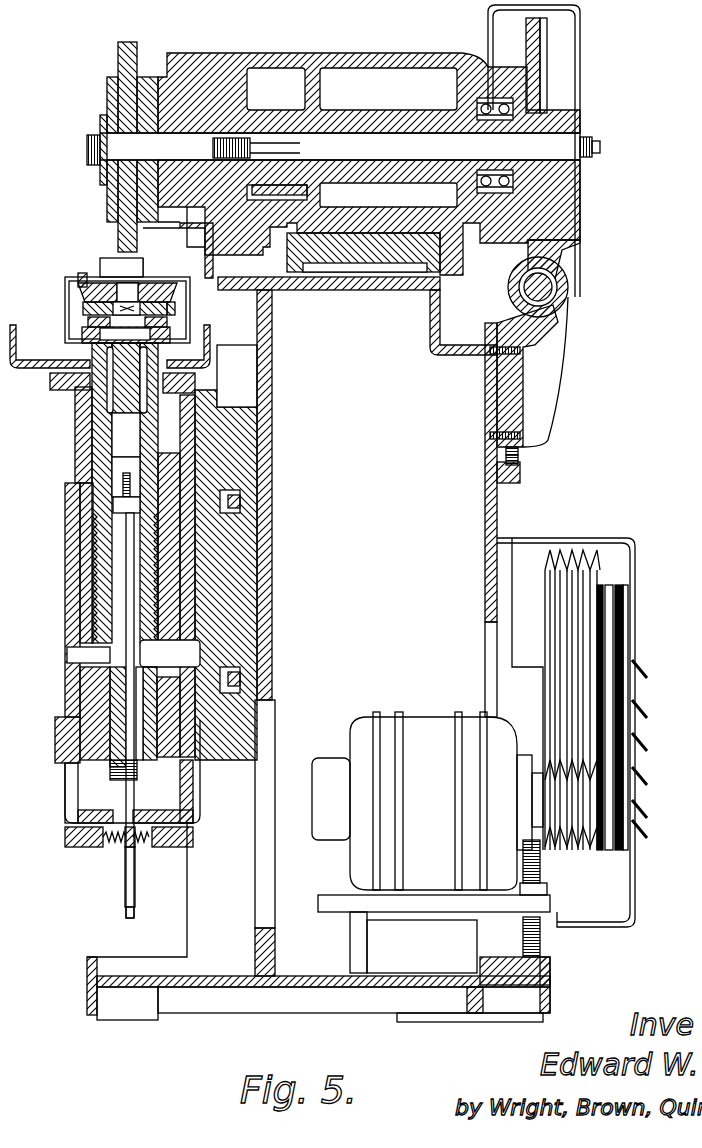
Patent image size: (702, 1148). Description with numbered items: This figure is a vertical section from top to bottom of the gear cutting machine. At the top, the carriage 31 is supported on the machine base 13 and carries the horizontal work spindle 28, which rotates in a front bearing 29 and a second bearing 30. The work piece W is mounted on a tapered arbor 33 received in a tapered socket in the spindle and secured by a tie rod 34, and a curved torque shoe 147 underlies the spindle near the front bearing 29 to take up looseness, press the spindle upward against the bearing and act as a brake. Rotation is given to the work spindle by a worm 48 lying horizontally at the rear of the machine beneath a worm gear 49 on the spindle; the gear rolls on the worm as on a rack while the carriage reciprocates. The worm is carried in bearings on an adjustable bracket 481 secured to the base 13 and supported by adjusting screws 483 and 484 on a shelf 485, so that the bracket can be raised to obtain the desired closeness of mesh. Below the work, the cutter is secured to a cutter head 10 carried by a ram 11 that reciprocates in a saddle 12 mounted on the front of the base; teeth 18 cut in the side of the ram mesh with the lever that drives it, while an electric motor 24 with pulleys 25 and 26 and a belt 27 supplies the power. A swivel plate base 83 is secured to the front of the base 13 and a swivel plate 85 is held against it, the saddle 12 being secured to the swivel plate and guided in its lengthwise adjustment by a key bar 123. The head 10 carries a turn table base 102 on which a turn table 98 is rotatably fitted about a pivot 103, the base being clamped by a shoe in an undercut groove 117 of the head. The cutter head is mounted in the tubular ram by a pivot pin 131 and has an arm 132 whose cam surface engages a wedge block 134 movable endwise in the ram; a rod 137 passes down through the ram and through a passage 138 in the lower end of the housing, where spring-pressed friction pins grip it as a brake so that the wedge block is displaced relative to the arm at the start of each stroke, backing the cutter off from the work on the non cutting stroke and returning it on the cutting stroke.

The workpiece spindle W is at (125, 48).
The carriage 31 is at (314, 56).
The front bearing 29 is at (256, 105).
The work spindle 28 is at (378, 118).
The bearing 30 is at (480, 104).
The tie rod 34 is at (556, 148).
The tapered arbor 33 is at (135, 156).
The torque shoe 147 is at (297, 193).
The worm gear 49 is at (541, 233).
The worm 48 is at (546, 283).
The turn table 98 is at (81, 274).
The pivot 103 is at (128, 284).
The turn table base 102 is at (70, 290).
The cutter head 10 is at (83, 310).
The undercut groove 117 is at (172, 312).
The pivot pin 131 is at (90, 347).
The adjustable bracket 481 is at (522, 378).
The adjusting screw 483 is at (520, 451).
The adjusting screw 484 is at (520, 462).
The shelf 485 is at (492, 480).
The ram 11 is at (95, 402).
The arm 132 is at (118, 432).
The swivel plate 85 is at (256, 452).
The wedge block 134 is at (118, 468).
The saddle 12 is at (72, 528).
The swivel plate base 83 is at (257, 556).
The machine base 13 is at (460, 535).
The pulley 26 is at (590, 553).
The teeth 18 is at (86, 574).
The key bar 123 is at (188, 612).
The belt 27 is at (614, 620).
The electric motor 24 is at (436, 724).
The pulley 25 is at (590, 802).
The rod 137 is at (128, 792).
The passage 138 is at (78, 806).